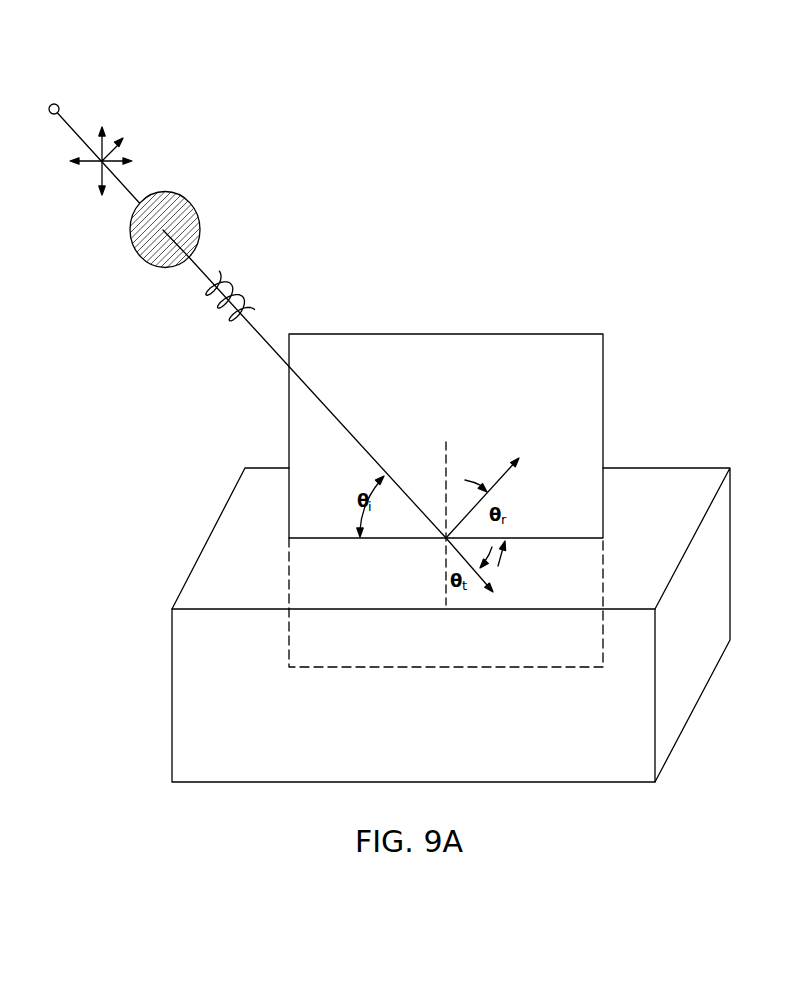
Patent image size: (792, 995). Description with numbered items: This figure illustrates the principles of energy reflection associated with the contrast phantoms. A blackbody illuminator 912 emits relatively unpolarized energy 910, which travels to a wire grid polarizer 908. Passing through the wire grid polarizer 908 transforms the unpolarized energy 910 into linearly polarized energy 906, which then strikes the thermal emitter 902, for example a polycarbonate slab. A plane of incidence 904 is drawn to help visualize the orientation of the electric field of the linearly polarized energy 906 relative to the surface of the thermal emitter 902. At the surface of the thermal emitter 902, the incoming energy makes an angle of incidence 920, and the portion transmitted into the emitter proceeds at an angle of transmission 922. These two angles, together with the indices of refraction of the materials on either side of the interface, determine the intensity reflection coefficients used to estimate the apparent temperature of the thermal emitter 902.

The thermal emitter 902 is at (697, 701).
The plane of incidence 904 is at (583, 334).
The linearly polarized energy 906 is at (248, 288).
The wire grid polarizer 908 is at (201, 229).
The unpolarized energy 910 is at (135, 142).
The blackbody illuminator 912 is at (55, 104).
The angle of incidence 920 is at (404, 505).
The angle of transmission 922 is at (446, 563).